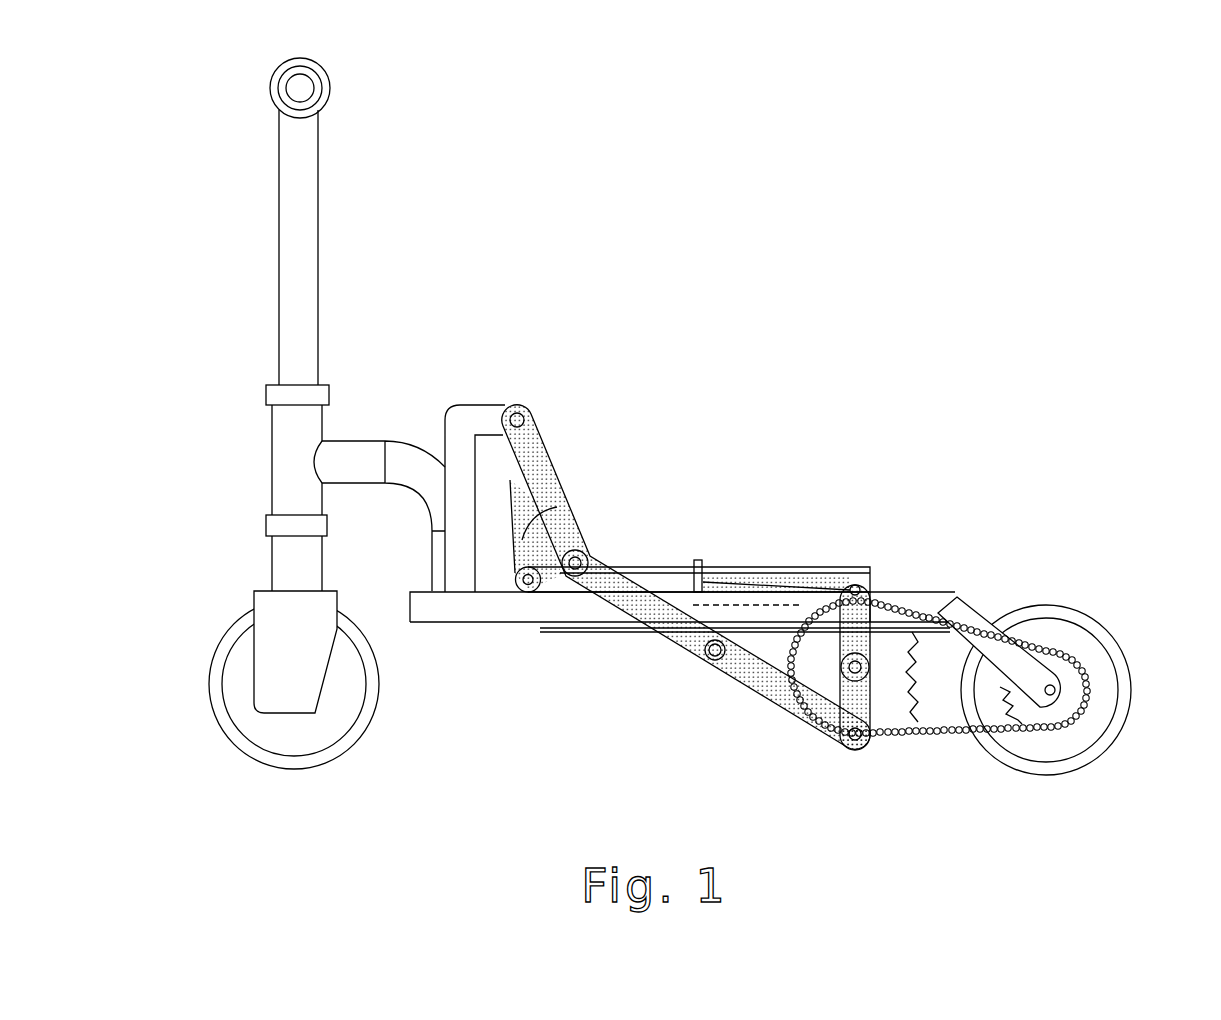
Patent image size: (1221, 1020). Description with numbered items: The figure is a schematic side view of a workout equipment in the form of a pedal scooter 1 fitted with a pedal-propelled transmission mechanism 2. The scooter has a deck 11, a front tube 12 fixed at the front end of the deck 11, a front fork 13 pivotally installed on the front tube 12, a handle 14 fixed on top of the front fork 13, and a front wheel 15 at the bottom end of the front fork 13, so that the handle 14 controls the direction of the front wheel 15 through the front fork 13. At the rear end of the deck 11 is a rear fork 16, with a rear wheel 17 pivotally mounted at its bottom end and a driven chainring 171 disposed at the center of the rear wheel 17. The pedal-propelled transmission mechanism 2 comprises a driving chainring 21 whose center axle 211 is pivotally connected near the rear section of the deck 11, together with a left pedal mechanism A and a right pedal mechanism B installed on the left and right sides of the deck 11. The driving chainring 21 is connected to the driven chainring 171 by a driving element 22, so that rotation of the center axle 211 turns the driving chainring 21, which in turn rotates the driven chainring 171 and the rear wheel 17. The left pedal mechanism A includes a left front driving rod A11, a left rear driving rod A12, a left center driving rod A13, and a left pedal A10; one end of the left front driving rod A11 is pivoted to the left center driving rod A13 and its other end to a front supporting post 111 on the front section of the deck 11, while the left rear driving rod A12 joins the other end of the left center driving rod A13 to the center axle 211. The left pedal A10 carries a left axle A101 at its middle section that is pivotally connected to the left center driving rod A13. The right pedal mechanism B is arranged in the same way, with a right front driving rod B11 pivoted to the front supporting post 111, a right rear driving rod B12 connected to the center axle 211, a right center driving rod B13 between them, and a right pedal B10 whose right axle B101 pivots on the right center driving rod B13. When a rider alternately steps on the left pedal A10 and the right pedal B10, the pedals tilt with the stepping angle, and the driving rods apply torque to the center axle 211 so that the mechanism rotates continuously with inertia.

The pedal scooter 1 is at (202, 255).
The deck 11 is at (444, 612).
The front supporting post 111 is at (480, 418).
The front tube 12 is at (305, 426).
The front fork 13 is at (243, 362).
The handle 14 is at (303, 90).
The front wheel 15 is at (240, 698).
The rear fork 16 is at (975, 627).
The rear wheel 17 is at (1092, 630).
The driven chainring 171 is at (1057, 680).
The pedal-propelled transmission mechanism 2 is at (1043, 445).
The driving chainring 21 is at (890, 735).
The center axle 211 is at (936, 595).
The driving element 22 is at (935, 740).
The left pedal mechanism A is at (800, 740).
The left pedal A10 is at (598, 637).
The left axle A101 is at (705, 668).
The left front driving rod A11 is at (538, 638).
The left rear driving rod A12 is at (813, 733).
The left center driving rod A13 is at (734, 680).
The right pedal mechanism B is at (585, 448).
The right pedal B10 is at (840, 567).
The right axle B101 is at (698, 562).
The right front driving rod B11 is at (570, 505).
The right rear driving rod B12 is at (900, 593).
The right center driving rod B13 is at (762, 587).